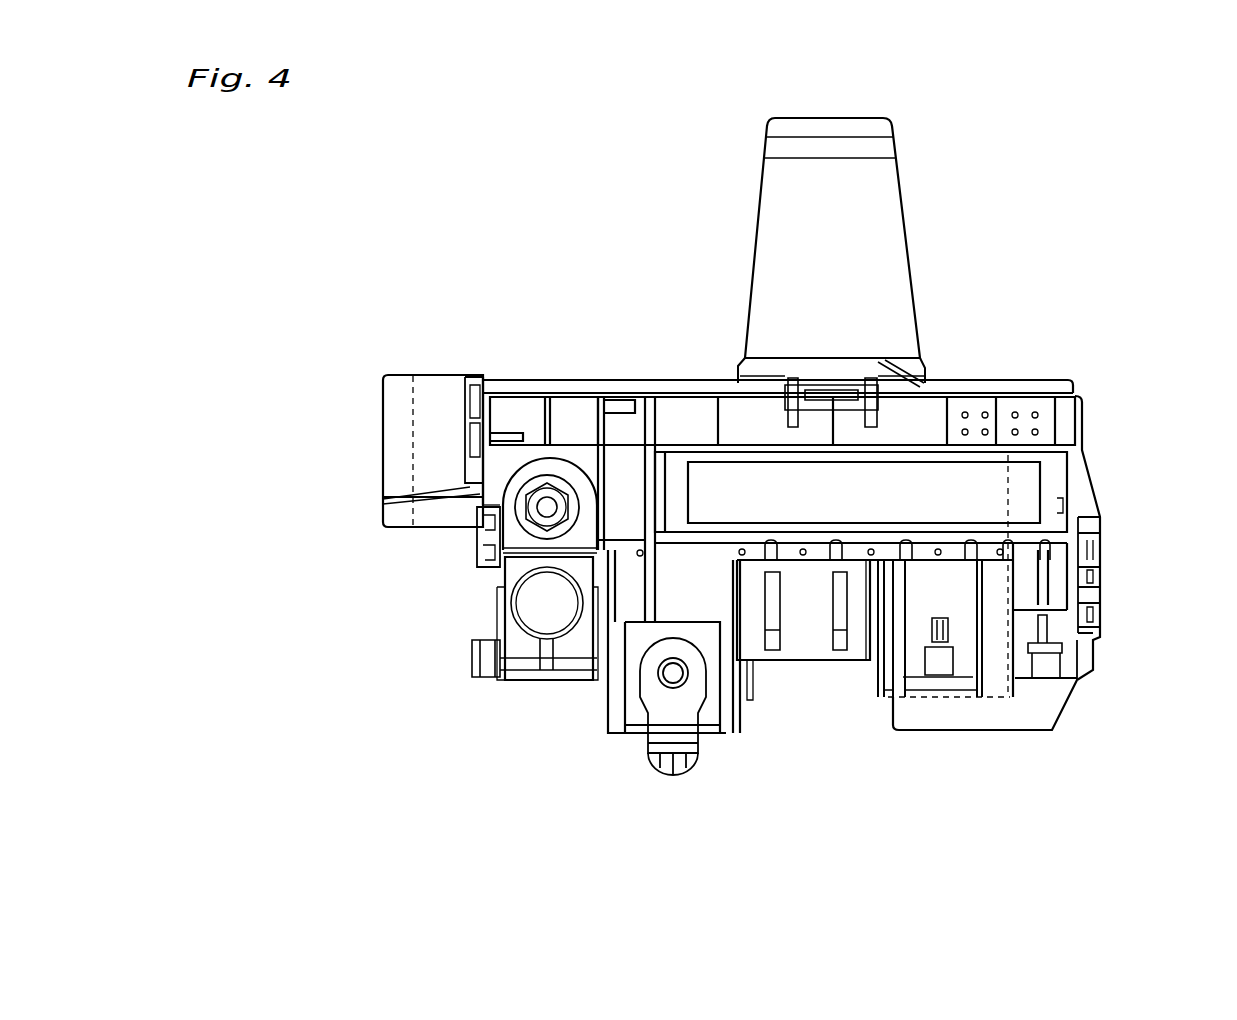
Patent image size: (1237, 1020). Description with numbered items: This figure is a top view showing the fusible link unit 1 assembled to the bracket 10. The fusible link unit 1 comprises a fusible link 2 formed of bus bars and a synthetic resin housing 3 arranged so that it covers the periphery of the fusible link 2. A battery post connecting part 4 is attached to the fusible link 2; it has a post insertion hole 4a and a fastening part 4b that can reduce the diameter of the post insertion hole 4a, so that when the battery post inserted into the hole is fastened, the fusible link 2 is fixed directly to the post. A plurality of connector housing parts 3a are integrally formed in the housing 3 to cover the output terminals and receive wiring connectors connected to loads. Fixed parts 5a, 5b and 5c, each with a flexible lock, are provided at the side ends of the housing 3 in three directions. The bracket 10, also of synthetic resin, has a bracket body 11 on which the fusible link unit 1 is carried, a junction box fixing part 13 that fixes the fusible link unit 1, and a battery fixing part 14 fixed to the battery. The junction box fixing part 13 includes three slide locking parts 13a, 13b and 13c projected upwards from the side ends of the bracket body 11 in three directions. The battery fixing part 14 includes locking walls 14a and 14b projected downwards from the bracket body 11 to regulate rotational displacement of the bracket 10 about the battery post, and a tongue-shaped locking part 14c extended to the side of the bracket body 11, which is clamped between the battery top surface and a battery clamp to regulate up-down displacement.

The fusible link unit 1 is at (634, 376).
The fusible link 2 is at (540, 470).
The housing 3 is at (573, 428).
The connector housing parts 3a is at (922, 655).
The battery post connecting part 4 is at (527, 688).
The post insertion hole 4a is at (522, 598).
The fastening part 4b is at (485, 677).
The fixed part 5a is at (470, 398).
The fixed part 5b is at (847, 378).
The fixed part 5c is at (1100, 572).
The bracket 10 is at (1075, 708).
The bracket body 11 is at (932, 700).
The junction box fixing part 13 is at (464, 438).
The slide locking part 13a is at (462, 398).
The slide locking part 13b is at (897, 385).
The slide locking part 13c is at (1100, 605).
The battery fixing part 14 is at (382, 441).
The locking wall 14a is at (392, 477).
The locking wall 14b is at (978, 730).
The tongue-shaped locking part 14c is at (878, 217).